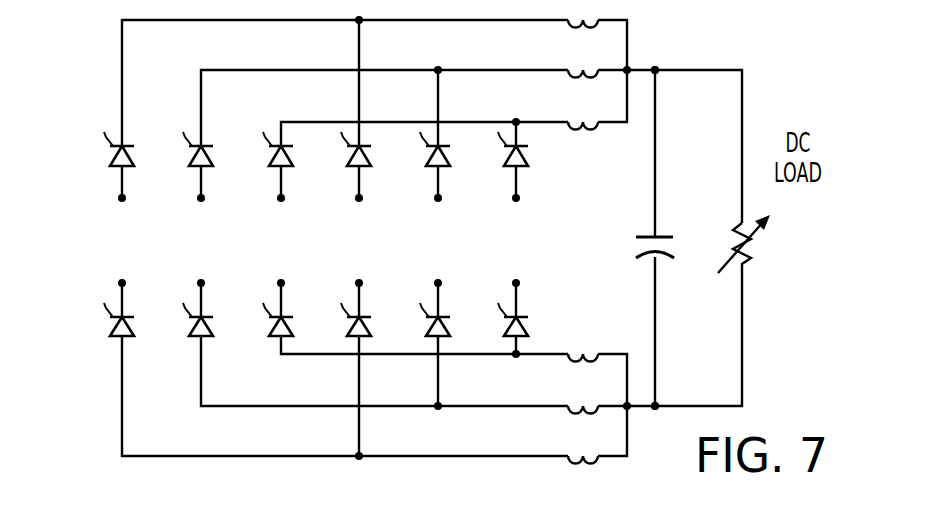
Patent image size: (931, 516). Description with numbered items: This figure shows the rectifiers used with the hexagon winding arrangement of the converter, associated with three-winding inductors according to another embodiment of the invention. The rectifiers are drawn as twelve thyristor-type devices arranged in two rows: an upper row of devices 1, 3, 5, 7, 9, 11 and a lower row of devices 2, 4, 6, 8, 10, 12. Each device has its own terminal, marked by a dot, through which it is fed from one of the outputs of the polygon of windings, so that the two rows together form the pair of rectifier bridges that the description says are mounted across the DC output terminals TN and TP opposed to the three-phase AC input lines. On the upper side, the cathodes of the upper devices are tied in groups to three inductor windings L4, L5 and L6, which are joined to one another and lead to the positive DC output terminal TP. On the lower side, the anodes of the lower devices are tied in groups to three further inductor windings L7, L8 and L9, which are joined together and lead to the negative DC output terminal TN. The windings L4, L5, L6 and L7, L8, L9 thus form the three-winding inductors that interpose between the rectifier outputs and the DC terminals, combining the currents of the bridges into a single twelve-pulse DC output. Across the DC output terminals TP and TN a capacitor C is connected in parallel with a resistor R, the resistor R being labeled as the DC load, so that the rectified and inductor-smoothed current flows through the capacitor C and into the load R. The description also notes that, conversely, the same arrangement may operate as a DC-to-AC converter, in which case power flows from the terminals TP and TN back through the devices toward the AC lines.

The thyristor 1 is at (119, 184).
The thyristor 2 is at (119, 293).
The thyristor 3 is at (198, 184).
The thyristor 4 is at (198, 293).
The thyristor 5 is at (278, 184).
The thyristor 6 is at (278, 293).
The thyristor 7 is at (356, 184).
The thyristor 8 is at (356, 293).
The thyristor 9 is at (435, 184).
The thyristor 10 is at (435, 293).
The thyristor 11 is at (513, 184).
The thyristor 12 is at (513, 293).
The inductor L4 is at (591, 25).
The inductor L5 is at (591, 75).
The inductor L6 is at (591, 127).
The inductor L7 is at (592, 359).
The inductor L8 is at (592, 411).
The inductor L9 is at (592, 461).
The DC output terminal TP is at (656, 68).
The DC output terminal TN is at (654, 410).
The capacitor C is at (647, 243).
The DC load resistor R is at (751, 252).